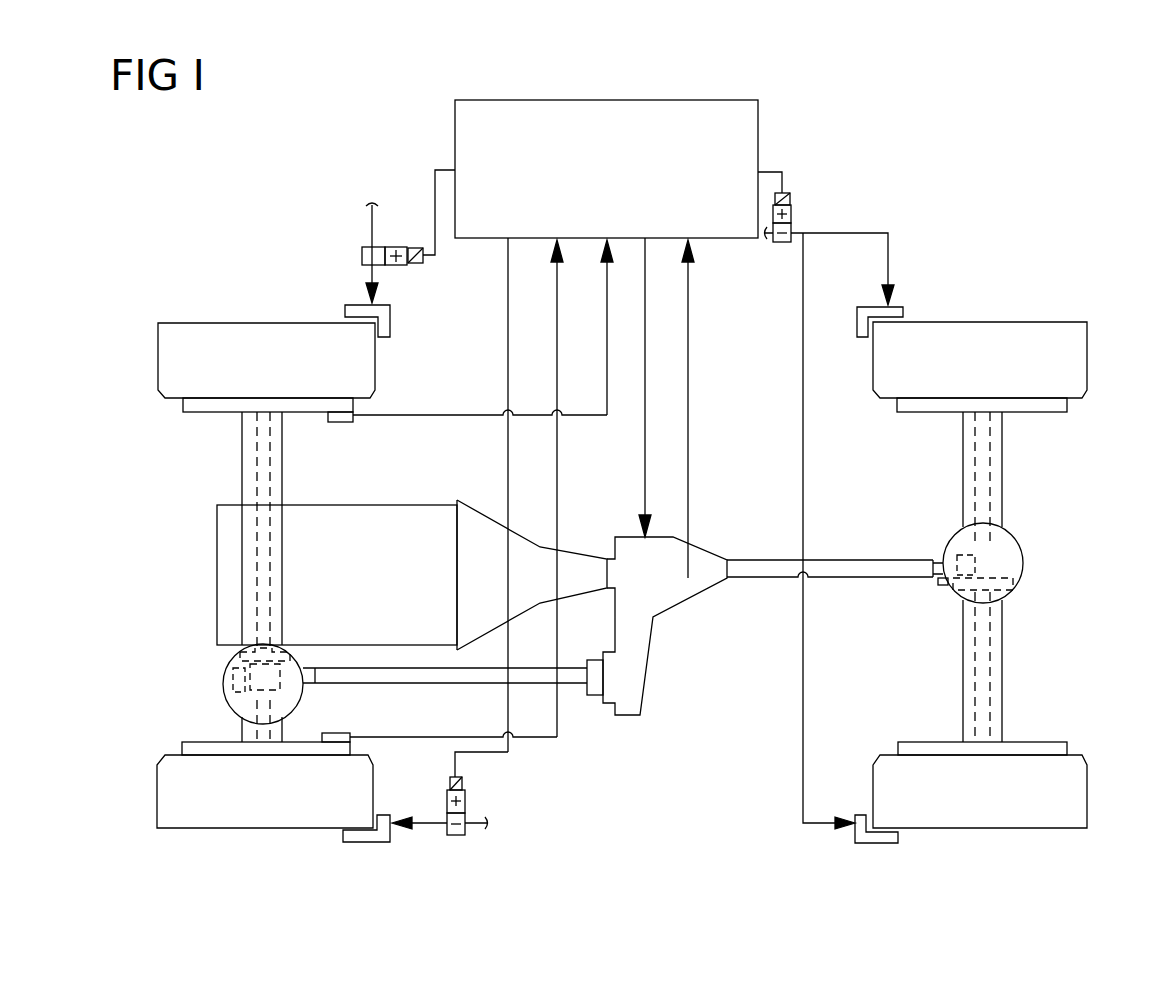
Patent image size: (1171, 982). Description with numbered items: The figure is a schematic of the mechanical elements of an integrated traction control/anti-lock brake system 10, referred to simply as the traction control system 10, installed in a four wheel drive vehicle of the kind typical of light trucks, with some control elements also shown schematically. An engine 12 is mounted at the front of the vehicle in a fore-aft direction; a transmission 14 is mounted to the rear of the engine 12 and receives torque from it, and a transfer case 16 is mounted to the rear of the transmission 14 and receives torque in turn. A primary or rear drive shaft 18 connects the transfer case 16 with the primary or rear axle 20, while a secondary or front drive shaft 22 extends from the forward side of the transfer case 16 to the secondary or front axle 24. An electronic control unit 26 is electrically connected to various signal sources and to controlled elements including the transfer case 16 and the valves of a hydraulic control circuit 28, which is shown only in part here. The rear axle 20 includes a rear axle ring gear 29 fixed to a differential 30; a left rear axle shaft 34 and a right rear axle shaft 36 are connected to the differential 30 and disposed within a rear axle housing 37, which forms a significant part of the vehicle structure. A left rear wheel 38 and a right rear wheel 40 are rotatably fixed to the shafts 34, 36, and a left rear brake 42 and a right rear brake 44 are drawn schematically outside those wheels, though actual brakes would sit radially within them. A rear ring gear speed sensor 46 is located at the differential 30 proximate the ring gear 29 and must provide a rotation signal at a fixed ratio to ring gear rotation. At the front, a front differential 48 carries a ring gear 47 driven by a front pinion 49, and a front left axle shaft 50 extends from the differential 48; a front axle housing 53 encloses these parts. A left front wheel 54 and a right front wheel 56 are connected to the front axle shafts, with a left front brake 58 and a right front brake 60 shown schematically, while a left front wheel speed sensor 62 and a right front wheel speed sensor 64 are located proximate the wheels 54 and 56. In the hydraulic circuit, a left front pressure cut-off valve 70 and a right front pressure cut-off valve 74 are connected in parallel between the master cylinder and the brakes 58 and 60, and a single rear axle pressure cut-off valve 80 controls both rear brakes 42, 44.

The traction control system 10 is at (978, 137).
The engine 12 is at (375, 517).
The transmission 14 is at (577, 565).
The transfer case 16 is at (630, 547).
The rear drive shaft 18 is at (878, 568).
The rear axle 20 is at (1020, 498).
The front drive shaft 22 is at (565, 678).
The front axle 24 is at (225, 483).
The electronic control unit 26 is at (490, 110).
The hydraulic control circuit 28 is at (895, 222).
The rear axle ring gear 29 is at (1020, 573).
The differential 30 is at (1005, 558).
The left rear axle shaft 34 is at (972, 693).
The right rear axle shaft 36 is at (990, 453).
The rear axle housing 37 is at (993, 680).
The left rear wheel 38 is at (1020, 820).
The right rear wheel 40 is at (1022, 332).
The left rear brake 42 is at (855, 835).
The right rear brake 44 is at (857, 330).
The rear ring gear speed sensor 46 is at (940, 586).
The front ring gear 47 is at (225, 672).
The front differential 48 is at (225, 690).
The front pinion 49 is at (310, 680).
The front left axle shaft 50 is at (240, 725).
The front axle housing 53 is at (225, 662).
The left front wheel 54 is at (255, 455).
The right front wheel 56 is at (220, 330).
The left front brake 58 is at (367, 842).
The right front brake 60 is at (350, 310).
The left front wheel speed sensor 62 is at (345, 733).
The right front wheel speed sensor 64 is at (345, 422).
The left front pressure cut-off valve 70 is at (465, 808).
The right front pressure cut-off valve 74 is at (400, 265).
The rear axle pressure cut-off valve 80 is at (792, 212).